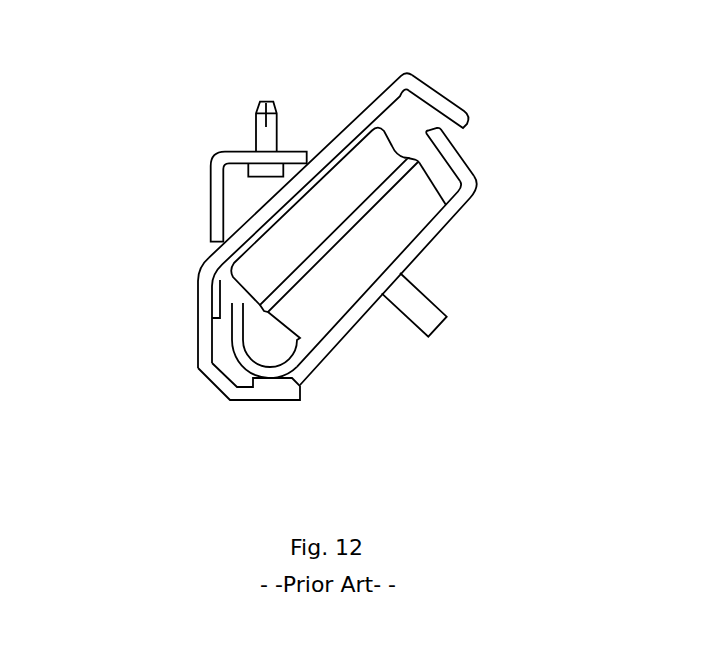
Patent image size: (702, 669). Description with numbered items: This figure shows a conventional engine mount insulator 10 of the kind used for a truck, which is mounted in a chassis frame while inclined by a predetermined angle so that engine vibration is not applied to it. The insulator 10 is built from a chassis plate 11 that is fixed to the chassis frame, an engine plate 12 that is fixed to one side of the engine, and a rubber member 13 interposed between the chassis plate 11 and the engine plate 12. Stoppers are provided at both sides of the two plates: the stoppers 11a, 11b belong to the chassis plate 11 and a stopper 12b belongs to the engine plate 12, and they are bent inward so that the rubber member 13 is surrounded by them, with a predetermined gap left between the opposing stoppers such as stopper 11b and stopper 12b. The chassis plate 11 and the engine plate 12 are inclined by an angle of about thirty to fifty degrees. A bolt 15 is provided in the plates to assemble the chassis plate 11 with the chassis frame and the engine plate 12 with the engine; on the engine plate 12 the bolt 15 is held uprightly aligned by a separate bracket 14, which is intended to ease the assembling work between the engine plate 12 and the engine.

The engine mount insulator 10 is at (196, 130).
The chassis plate 11 is at (445, 221).
The stopper 11a is at (240, 323).
The stopper 11b is at (458, 157).
The engine plate 12 is at (358, 115).
The stopper 12b is at (462, 116).
The rubber member 13 is at (390, 157).
The bracket 14 is at (217, 203).
The bolt 15 is at (262, 98).